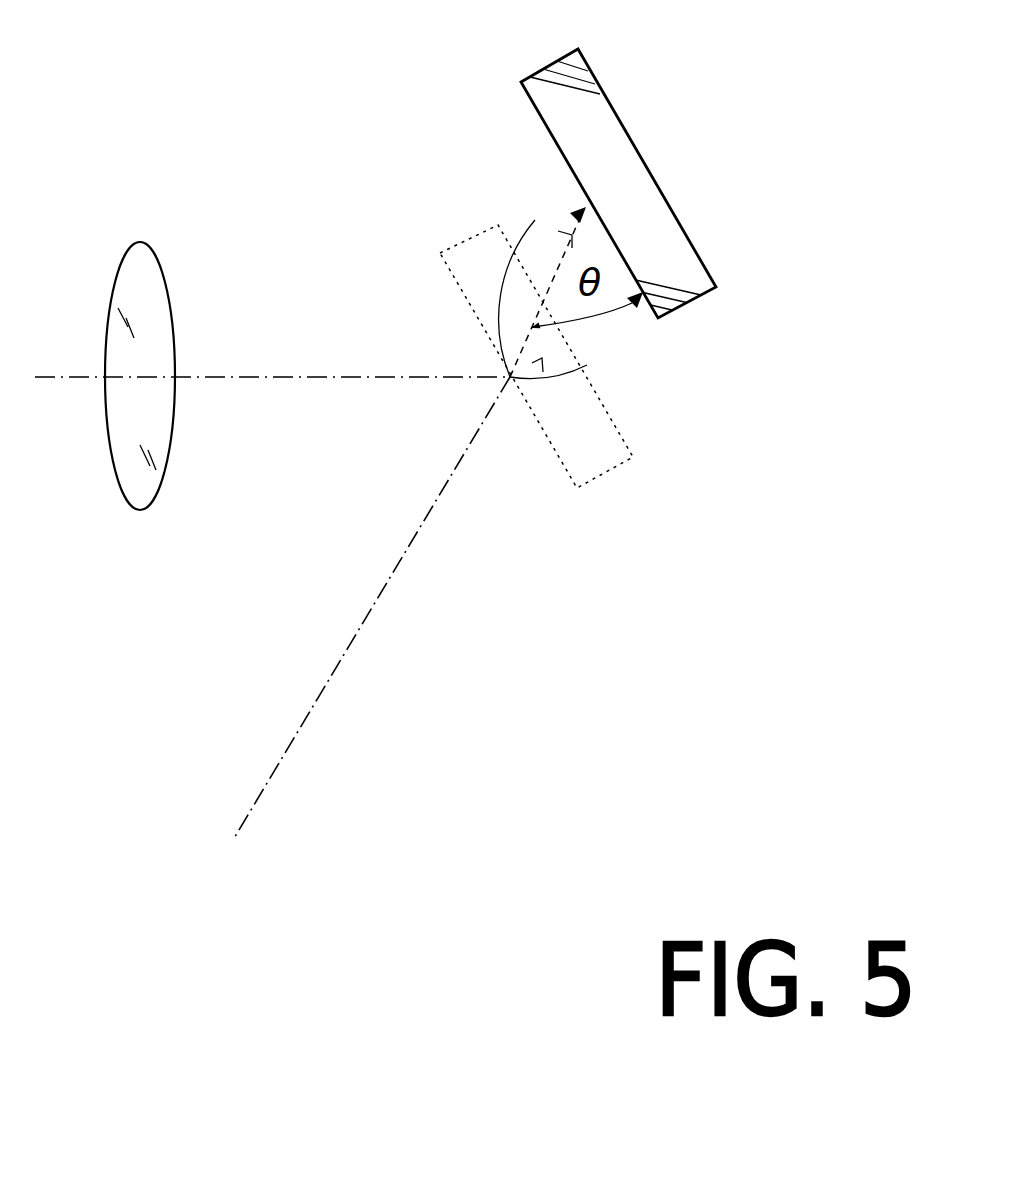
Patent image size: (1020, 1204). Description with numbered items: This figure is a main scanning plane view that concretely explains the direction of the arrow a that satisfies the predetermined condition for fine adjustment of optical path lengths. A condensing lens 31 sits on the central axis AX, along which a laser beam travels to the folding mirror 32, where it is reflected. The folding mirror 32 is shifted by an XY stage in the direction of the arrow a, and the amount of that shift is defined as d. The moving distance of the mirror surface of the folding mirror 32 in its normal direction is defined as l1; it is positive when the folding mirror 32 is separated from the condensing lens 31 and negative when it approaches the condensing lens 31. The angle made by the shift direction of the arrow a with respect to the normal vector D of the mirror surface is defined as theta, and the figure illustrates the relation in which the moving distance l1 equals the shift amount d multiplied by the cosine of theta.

The condensing lens 31 is at (127, 310).
The folding mirror 32 is at (628, 168).
The central axis AX is at (315, 377).
The arrow a is at (552, 226).
The shift amount d is at (558, 231).
The moving distance l1 is at (636, 306).
The normal vector D is at (543, 378).